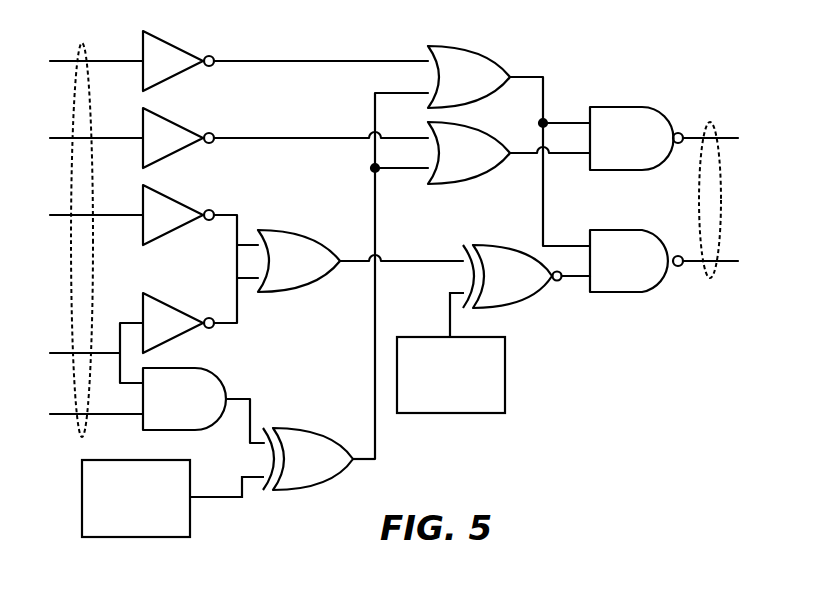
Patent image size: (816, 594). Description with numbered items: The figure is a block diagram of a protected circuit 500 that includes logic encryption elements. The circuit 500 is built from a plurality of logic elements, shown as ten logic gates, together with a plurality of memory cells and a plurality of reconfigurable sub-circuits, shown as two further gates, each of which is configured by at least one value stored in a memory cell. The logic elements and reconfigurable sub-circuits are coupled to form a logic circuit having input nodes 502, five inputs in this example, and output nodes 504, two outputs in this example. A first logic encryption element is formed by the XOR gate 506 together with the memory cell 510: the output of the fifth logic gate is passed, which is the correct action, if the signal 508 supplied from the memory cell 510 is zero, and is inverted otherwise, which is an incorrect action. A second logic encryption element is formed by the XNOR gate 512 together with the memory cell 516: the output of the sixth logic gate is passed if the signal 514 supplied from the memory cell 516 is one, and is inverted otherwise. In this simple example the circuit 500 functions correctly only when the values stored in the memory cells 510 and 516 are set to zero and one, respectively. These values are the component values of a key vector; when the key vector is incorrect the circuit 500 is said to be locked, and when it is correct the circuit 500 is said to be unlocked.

The protected circuit 500 is at (401, 290).
The input nodes 502 is at (82, 43).
The output nodes 504 is at (710, 122).
The XOR gate 506 is at (297, 492).
The signal 508 is at (205, 500).
The memory cell 510 is at (136, 498).
The XNOR gate 512 is at (543, 292).
The signal 514 is at (444, 308).
The memory cell 516 is at (451, 375).